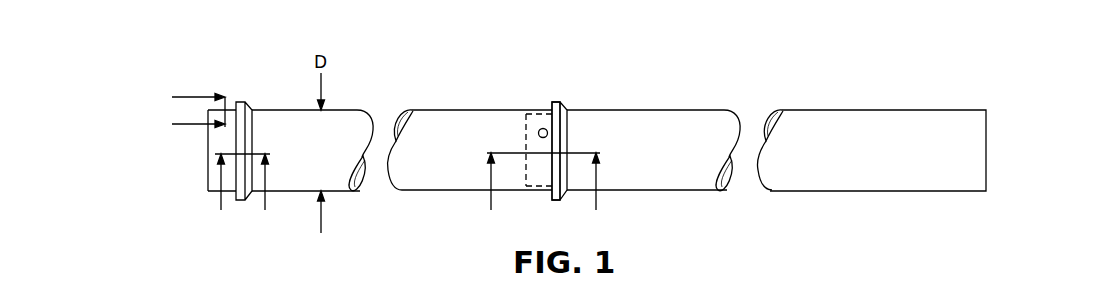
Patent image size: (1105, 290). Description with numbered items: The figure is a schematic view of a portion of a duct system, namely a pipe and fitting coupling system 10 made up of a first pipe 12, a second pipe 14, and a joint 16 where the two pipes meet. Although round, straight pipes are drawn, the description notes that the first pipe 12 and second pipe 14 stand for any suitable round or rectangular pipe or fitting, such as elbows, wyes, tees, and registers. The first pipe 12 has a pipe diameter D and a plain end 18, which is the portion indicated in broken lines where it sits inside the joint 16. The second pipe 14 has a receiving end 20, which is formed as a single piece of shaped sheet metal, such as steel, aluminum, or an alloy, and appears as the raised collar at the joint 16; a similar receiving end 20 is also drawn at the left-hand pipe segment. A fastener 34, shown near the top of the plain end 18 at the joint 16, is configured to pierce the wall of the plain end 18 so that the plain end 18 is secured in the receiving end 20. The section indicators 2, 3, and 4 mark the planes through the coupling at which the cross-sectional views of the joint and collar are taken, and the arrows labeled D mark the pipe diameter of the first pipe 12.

The pipe and fitting coupling system 10 is at (563, 118).
The first pipe 12 is at (433, 92).
The second pipe 14 is at (686, 101).
The joint 16 is at (556, 89).
The plain end 18 is at (539, 96).
The receiving end 20 is at (247, 84).
The fastener 34 is at (538, 131).
The section line 2- 2 is at (543, 193).
The section line 3- 3 is at (189, 112).
The section line 4- 4 is at (242, 194).